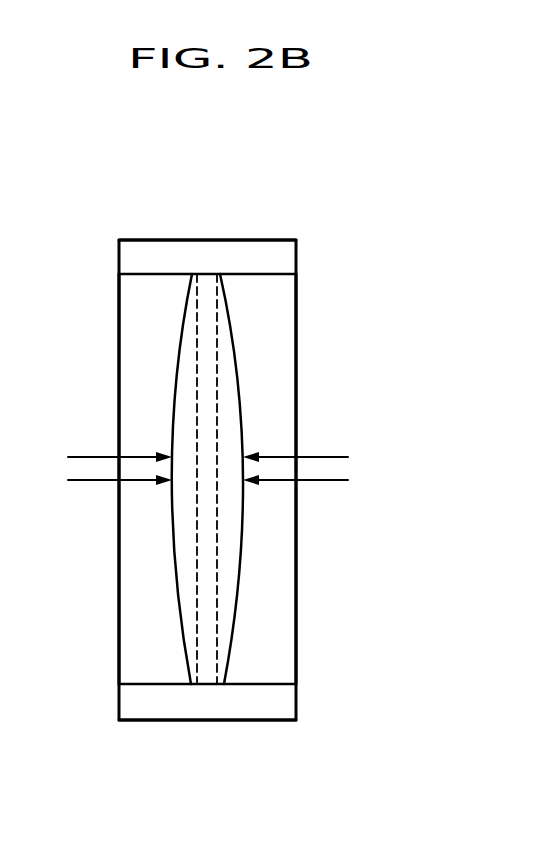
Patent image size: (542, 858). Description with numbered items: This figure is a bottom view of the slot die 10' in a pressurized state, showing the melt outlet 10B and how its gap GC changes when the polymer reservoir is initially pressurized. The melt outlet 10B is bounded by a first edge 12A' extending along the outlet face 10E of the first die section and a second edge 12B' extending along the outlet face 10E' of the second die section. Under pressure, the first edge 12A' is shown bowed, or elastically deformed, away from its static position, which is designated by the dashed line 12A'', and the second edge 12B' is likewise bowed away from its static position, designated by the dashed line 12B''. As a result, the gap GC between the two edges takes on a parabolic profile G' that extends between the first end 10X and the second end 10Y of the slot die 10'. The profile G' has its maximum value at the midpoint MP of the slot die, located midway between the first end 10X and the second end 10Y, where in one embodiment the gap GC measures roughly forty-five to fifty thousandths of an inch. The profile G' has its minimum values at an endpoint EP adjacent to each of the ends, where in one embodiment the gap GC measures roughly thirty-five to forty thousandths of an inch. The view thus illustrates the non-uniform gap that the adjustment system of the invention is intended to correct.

The slot die 10' is at (154, 449).
The first end 10X is at (215, 240).
The second end 10Y is at (215, 720).
The endpoint EP is at (222, 282).
The outlet face 10E is at (132, 538).
The outlet face 10E' is at (331, 479).
The first edge 12A' is at (101, 479).
The dashed line 12A'' is at (118, 479).
The second edge 12B' is at (312, 479).
The dashed line 12B'' is at (303, 479).
The gap GC is at (108, 455).
The parabolic profile G' is at (318, 490).
The midpoint MP is at (172, 484).
The melt outlet 10B is at (196, 610).